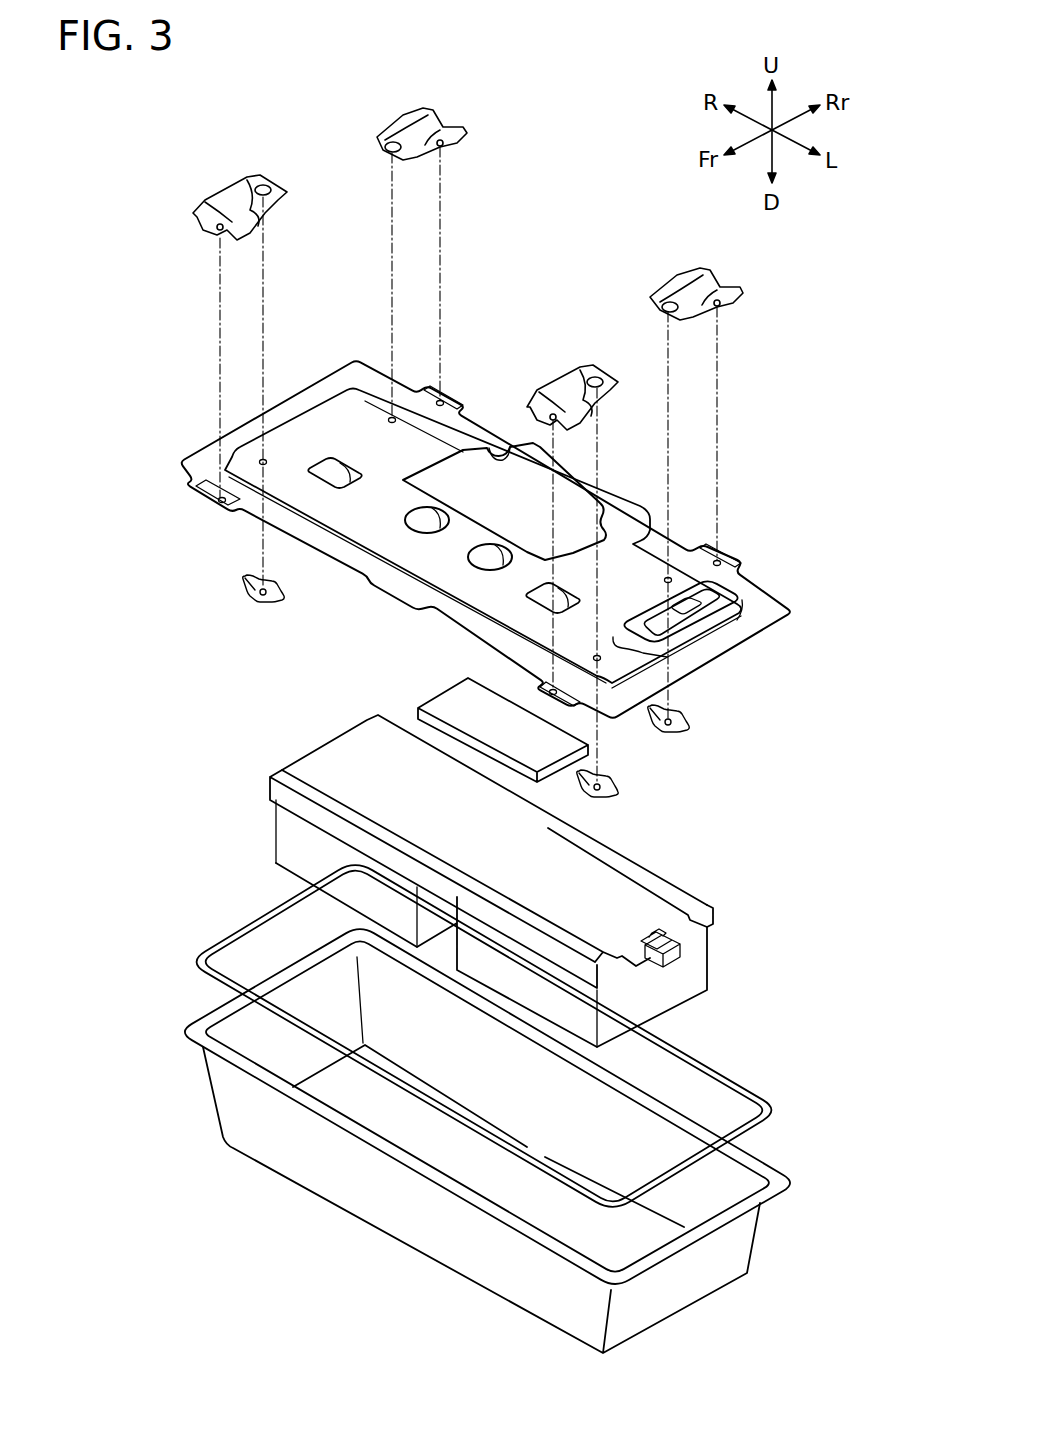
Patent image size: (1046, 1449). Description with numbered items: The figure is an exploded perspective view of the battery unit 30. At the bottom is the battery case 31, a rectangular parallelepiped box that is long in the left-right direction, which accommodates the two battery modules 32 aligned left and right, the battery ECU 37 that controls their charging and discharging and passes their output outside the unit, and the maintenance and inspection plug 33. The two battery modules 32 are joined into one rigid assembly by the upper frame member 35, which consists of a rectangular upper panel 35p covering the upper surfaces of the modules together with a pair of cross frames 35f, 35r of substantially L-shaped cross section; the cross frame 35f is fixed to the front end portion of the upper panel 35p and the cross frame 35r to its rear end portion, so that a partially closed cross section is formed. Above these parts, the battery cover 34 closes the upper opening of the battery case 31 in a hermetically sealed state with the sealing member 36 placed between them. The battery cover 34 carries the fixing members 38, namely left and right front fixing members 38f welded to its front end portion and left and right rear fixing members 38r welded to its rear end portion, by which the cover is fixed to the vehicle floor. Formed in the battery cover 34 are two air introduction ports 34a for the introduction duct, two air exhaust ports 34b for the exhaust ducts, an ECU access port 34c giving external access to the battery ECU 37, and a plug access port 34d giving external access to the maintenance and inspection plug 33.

The battery unit 30 is at (763, 435).
The battery case 31 is at (713, 1263).
The battery modules 32 is at (310, 850).
The maintenance and inspection plug 33 is at (673, 957).
The battery cover 34 is at (773, 612).
The air introduction ports 34a is at (440, 512).
The air exhaust ports 34b is at (338, 470).
The ECU access port 34c is at (510, 450).
The plug access port 34d is at (700, 603).
The upper frame member 35 is at (680, 891).
The cross frame 35f is at (310, 810).
The upper panel 35p is at (343, 763).
The cross frame 35r is at (697, 903).
The sealing member 36 is at (777, 1108).
The battery ECU 37 is at (457, 700).
The fixing members 38 is at (377, 27).
The front fixing members 38f is at (247, 197).
The rear fixing members 38r is at (410, 137).